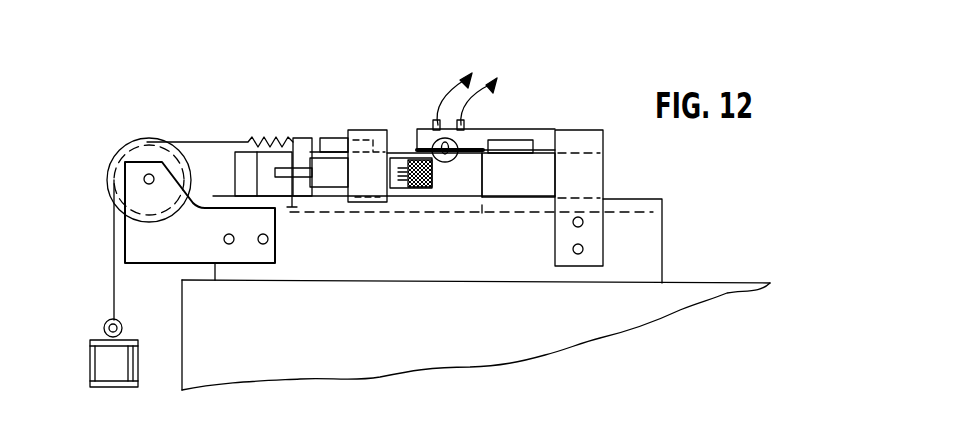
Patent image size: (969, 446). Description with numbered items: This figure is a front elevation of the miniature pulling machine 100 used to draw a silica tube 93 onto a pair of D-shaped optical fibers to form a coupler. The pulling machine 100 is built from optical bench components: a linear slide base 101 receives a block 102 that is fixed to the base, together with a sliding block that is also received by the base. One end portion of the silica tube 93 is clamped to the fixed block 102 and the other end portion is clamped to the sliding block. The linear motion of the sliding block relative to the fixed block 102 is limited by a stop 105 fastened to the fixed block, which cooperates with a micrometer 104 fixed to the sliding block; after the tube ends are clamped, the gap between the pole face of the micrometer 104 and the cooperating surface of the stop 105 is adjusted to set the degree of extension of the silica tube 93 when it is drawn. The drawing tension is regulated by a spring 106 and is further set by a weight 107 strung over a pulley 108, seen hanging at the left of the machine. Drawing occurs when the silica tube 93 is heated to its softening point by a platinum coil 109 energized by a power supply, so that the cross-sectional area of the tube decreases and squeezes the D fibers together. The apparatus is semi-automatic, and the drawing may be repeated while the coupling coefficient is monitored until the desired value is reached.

The miniature pulling machine 100 is at (585, 80).
The linear slide base 101 is at (662, 238).
The block 102 is at (603, 178).
The micrometer 104 is at (337, 163).
The stop 105 is at (250, 143).
The spring 106 is at (278, 143).
The weight 107 is at (92, 355).
The pulley 108 is at (183, 100).
The platinum coil 109 is at (466, 135).
The silica tube 93 is at (400, 150).